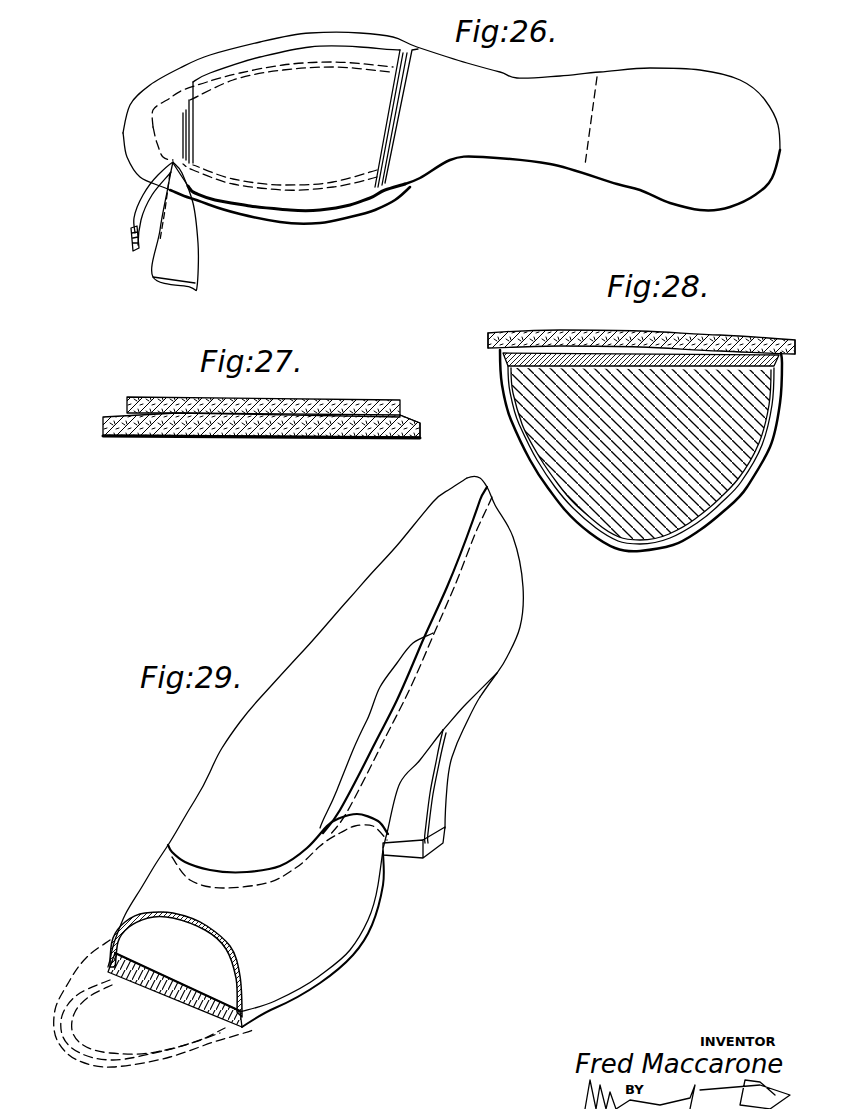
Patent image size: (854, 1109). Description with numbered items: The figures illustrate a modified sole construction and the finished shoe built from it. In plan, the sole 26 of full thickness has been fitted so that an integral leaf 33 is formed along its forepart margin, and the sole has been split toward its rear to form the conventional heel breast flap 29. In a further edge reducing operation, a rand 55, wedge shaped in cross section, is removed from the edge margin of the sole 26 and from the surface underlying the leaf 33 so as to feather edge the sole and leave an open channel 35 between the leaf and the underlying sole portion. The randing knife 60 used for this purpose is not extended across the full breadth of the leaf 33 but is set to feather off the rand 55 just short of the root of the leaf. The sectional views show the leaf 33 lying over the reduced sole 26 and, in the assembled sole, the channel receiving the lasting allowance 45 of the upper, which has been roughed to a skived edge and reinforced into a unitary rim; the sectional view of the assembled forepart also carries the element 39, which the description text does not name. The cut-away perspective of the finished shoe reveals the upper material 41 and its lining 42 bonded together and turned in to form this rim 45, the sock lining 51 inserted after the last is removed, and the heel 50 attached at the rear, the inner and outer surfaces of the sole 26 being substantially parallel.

In FIG. 26, the sole 26 is at (451, 127).
In FIG. 27, the sole 26 is at (268, 441).
In FIG. 28, the sole 26 is at (710, 340).
In FIG. 29, the sole 26 is at (290, 998).
In FIG. 26, the integral leaf 33 is at (300, 55).
In FIG. 27, the integral leaf 33 is at (370, 402).
In FIG. 28, the integral leaf 33 is at (503, 358).
In FIG. 26, the heel breast flap 29 is at (588, 157).
In FIG. 29, the heel breast flap 29 is at (415, 808).
In FIG. 26, the rand 55 is at (136, 222).
In FIG. 26, the randing knife 60 is at (187, 261).
In FIG. 27, the open channel 35 is at (400, 424).
In FIG. 28, the lasting allowance 45 is at (497, 336).
In FIG. 28, the upper material 41 is at (505, 395).
In FIG. 29, the upper material 41 is at (258, 993).
In FIG. 28, the lining 42 is at (512, 420).
In FIG. 29, the lining 42 is at (208, 976).
In FIG. 28, the filler 39 is at (717, 472).
In FIG. 29, the sock lining 51 is at (162, 984).
In FIG. 29, the heel 50 is at (450, 761).